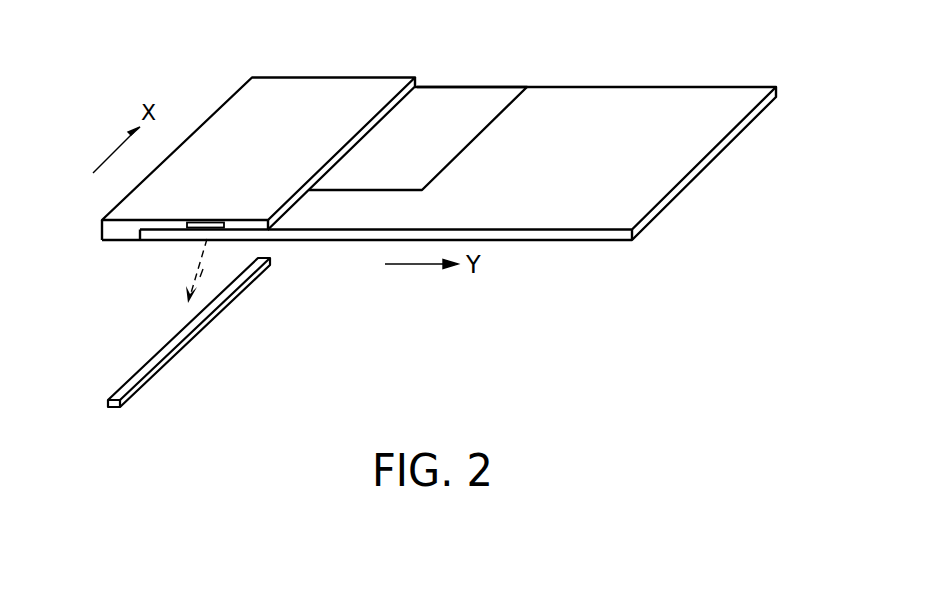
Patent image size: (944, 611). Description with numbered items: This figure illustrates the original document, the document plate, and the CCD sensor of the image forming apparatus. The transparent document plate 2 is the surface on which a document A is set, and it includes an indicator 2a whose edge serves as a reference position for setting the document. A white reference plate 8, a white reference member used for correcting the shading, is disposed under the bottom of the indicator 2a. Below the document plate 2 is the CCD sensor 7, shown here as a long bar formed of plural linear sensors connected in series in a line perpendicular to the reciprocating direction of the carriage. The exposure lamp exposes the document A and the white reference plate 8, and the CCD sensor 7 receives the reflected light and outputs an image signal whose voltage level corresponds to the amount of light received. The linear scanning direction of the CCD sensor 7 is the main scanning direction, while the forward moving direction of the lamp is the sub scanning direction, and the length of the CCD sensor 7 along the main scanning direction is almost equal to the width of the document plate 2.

The document plate 2 is at (649, 95).
The indicator 2a is at (325, 88).
The document A is at (476, 95).
The CCD sensor 7 is at (113, 408).
The white reference plate 8 is at (192, 230).